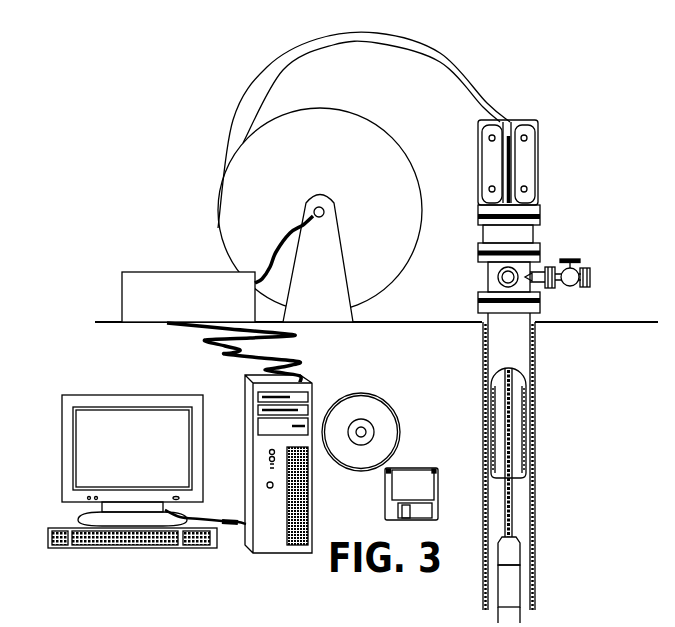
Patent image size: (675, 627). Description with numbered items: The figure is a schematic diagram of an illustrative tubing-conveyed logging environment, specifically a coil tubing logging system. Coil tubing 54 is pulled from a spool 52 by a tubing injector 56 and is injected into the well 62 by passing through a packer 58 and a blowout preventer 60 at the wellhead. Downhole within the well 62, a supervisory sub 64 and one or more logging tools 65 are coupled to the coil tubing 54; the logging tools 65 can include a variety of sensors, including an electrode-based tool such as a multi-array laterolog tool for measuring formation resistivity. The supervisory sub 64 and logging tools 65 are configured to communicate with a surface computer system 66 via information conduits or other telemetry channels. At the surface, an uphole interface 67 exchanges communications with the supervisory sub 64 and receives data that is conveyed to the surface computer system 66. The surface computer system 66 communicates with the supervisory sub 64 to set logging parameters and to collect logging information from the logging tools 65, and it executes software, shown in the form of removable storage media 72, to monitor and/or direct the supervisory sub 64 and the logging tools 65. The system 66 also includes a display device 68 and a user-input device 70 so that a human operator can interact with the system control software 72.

The spool 52 is at (316, 178).
The coil tubing 54 is at (262, 88).
The tubing injector 56 is at (536, 149).
The packer 58 is at (534, 232).
The blowout preventer 60 is at (487, 278).
The well 62 is at (530, 363).
The supervisory sub 64 is at (518, 550).
The logging tools 65 is at (520, 592).
The surface computer system 66 is at (247, 491).
The uphole interface 67 is at (165, 270).
The display device 68 is at (68, 504).
The user-input device 70 is at (67, 549).
The removable storage media 72 is at (385, 476).